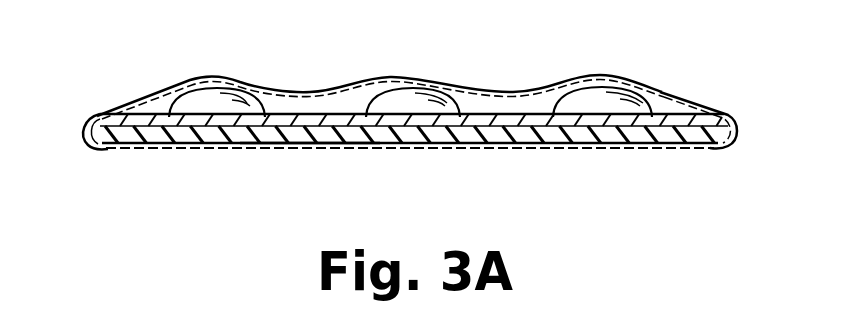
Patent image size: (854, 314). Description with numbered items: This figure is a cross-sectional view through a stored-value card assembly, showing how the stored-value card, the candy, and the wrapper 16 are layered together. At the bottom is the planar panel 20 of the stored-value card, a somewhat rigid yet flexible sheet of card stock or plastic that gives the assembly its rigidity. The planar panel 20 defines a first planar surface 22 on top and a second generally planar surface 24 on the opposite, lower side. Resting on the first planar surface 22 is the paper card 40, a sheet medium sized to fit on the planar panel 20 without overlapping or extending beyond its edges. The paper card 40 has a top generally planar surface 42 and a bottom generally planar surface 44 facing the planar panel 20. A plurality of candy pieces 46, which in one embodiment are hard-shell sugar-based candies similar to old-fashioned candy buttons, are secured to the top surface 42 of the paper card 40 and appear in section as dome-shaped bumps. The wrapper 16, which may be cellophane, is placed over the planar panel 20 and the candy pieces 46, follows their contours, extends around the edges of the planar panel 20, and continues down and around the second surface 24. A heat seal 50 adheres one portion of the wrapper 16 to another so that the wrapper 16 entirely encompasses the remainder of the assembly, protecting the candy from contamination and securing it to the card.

The wrapper 16 is at (665, 93).
The planar panel 20 is at (605, 133).
The first planar surface 22 is at (97, 115).
The second generally planar surface 24 is at (307, 150).
The paper card 40 is at (520, 117).
The top generally planar surface 42 is at (493, 110).
The bottom generally planar surface 44 is at (230, 122).
The candy pieces 46 is at (268, 87).
The heat seal 50 is at (130, 150).